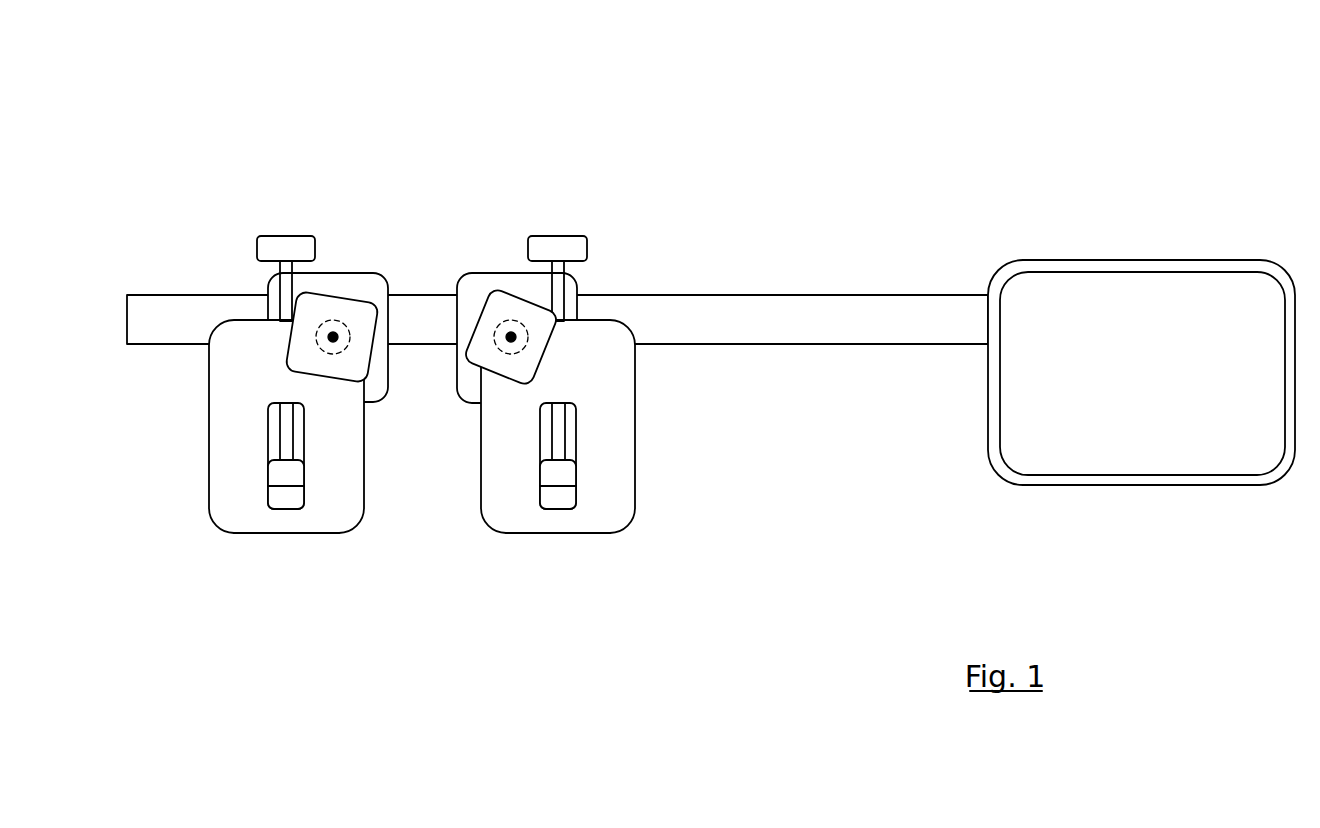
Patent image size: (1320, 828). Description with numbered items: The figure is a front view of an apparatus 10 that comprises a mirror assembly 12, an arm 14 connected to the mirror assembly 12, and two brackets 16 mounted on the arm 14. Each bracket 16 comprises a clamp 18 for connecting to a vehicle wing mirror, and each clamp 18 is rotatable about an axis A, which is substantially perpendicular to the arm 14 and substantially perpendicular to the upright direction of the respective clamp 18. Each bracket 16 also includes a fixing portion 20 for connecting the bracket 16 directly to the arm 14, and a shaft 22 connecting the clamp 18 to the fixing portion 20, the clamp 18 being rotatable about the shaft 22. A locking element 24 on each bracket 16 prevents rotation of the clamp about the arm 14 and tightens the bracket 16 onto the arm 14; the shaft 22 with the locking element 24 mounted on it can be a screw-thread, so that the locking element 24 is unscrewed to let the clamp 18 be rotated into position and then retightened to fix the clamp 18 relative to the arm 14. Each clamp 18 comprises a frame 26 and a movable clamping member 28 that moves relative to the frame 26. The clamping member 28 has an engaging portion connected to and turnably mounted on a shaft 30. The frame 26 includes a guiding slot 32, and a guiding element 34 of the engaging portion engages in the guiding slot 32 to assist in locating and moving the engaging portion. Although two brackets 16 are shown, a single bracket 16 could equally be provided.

The apparatus 10 is at (375, 132).
The mirror assembly 12 is at (988, 413).
The arm 14 is at (835, 295).
The bracket 16 is at (213, 565).
The clamp 18 is at (209, 437).
The fixing portion 20 is at (340, 273).
The shaft 22 is at (350, 338).
The locking element 24 is at (295, 330).
The frame 26 is at (332, 533).
The clamping member 28 is at (268, 236).
The shaft 30 is at (293, 450).
The guiding slot 32 is at (267, 497).
The guiding element 34 is at (305, 472).
The axis A is at (333, 337).